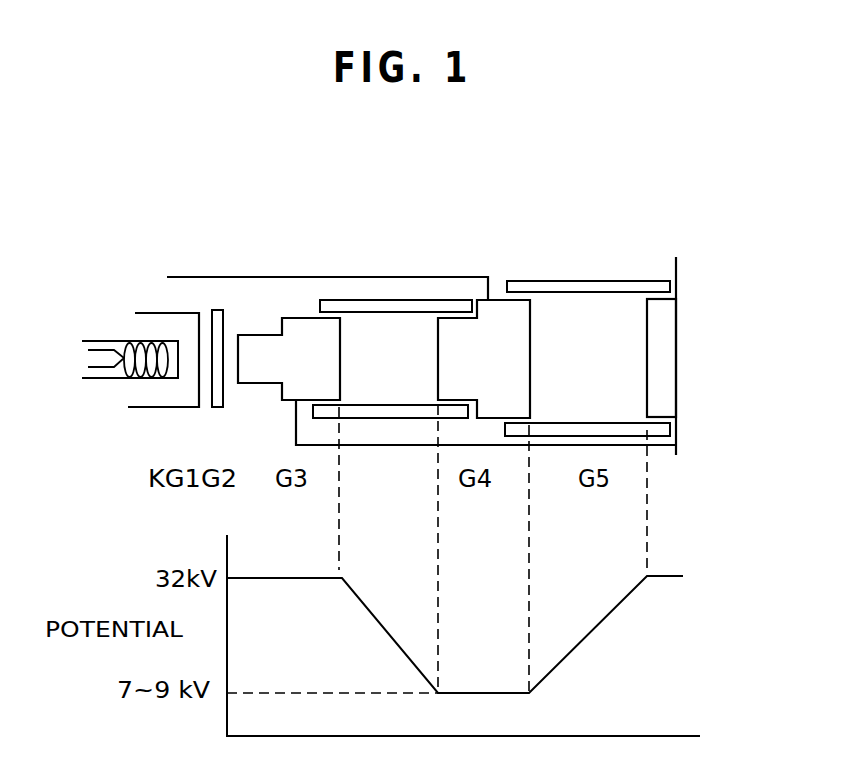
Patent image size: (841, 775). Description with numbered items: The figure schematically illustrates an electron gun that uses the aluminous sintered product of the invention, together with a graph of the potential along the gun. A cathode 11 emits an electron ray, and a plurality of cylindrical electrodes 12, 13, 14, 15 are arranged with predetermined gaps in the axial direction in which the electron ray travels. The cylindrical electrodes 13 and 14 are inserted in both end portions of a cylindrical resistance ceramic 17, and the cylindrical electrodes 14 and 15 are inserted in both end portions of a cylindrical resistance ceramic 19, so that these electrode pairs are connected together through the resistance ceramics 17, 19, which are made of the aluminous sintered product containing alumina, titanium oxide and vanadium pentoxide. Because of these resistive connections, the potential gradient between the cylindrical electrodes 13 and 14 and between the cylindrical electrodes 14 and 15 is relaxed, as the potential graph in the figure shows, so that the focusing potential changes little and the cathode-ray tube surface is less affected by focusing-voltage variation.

The cathode 11 is at (107, 378).
The cylindrical electrode 12 is at (217, 308).
The cylindrical electrode 13 is at (293, 323).
The cylindrical electrode 14 is at (497, 305).
The cylindrical electrode 15 is at (662, 317).
The resistance ceramic 17 is at (388, 302).
The resistance ceramic 19 is at (582, 287).